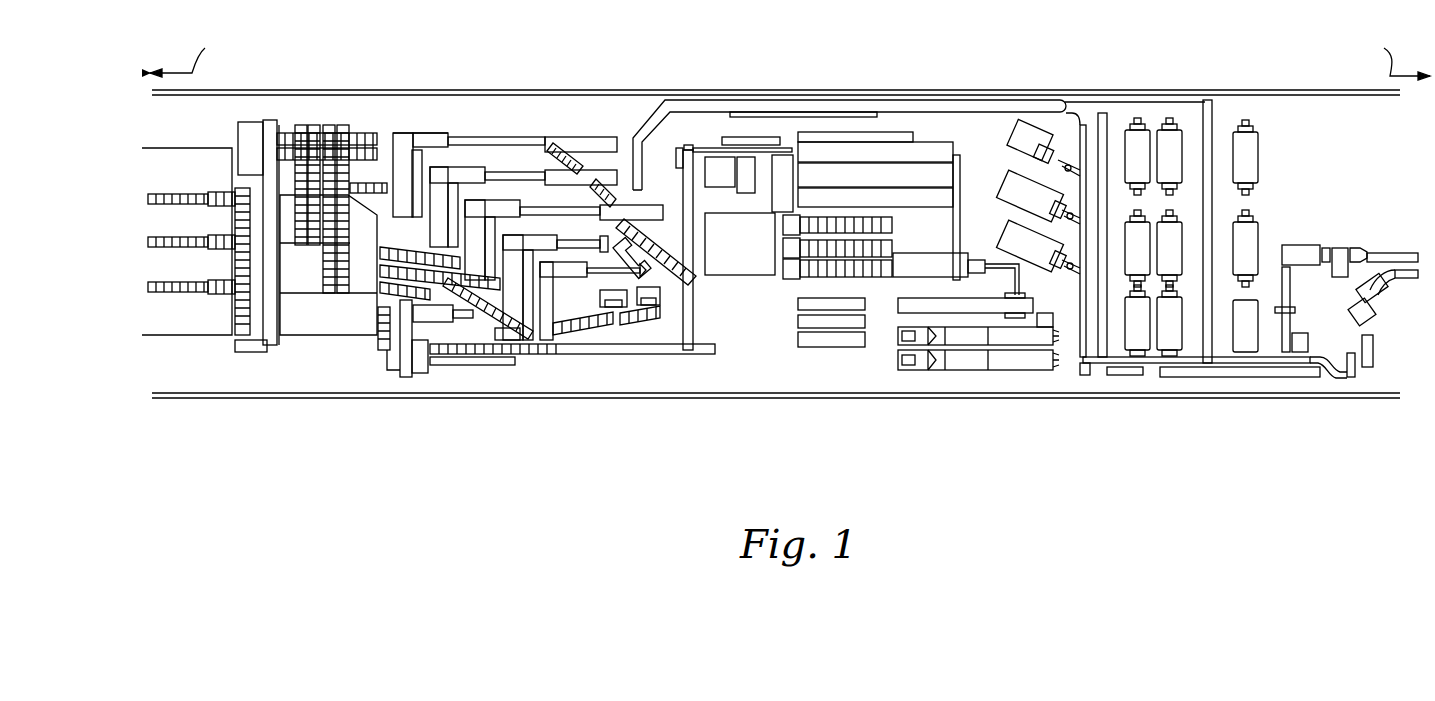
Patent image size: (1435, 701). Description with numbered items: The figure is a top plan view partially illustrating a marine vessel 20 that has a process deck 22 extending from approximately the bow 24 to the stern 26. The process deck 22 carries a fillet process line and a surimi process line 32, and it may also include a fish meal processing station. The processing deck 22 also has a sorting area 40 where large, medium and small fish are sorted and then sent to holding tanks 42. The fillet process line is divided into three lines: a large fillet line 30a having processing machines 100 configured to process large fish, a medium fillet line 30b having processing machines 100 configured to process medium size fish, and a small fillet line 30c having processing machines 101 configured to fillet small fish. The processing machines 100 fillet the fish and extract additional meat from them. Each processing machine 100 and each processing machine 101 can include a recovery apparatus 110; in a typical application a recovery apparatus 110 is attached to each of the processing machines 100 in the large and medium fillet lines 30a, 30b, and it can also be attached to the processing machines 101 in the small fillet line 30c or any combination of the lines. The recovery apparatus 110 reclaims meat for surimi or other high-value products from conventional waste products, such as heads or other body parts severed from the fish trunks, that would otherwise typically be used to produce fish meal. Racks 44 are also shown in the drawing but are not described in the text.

The marine vessel 20 is at (725, 396).
The process deck 22 is at (361, 378).
The bow 24 is at (1392, 58).
The stern 26 is at (188, 57).
The large fillet line 30a is at (456, 130).
The medium fillet line 30b is at (568, 228).
The small fillet line 30c is at (562, 292).
The surimi process line 32 is at (776, 302).
The sorting area 40 is at (220, 352).
The holding tanks 42 is at (317, 315).
The gear racks 44 is at (403, 153).
The processing machines 100 is at (418, 200).
The processing machines 101 is at (540, 346).
The recovery apparatus 110 is at (487, 160).